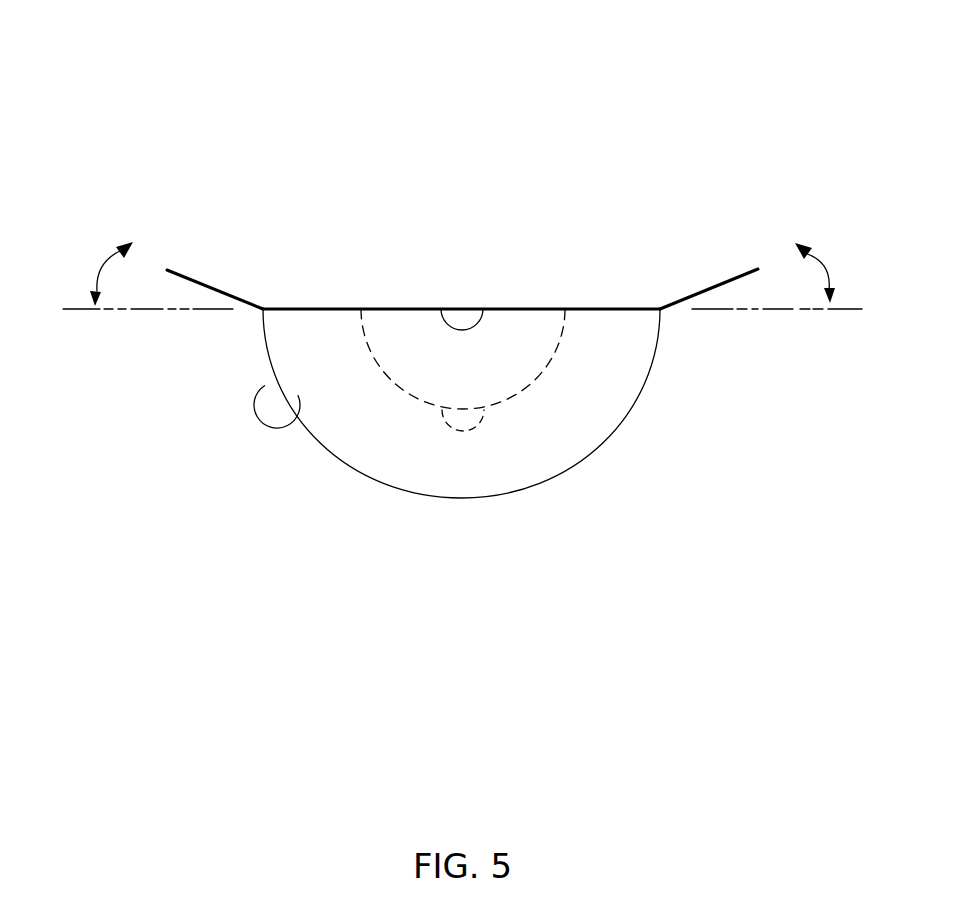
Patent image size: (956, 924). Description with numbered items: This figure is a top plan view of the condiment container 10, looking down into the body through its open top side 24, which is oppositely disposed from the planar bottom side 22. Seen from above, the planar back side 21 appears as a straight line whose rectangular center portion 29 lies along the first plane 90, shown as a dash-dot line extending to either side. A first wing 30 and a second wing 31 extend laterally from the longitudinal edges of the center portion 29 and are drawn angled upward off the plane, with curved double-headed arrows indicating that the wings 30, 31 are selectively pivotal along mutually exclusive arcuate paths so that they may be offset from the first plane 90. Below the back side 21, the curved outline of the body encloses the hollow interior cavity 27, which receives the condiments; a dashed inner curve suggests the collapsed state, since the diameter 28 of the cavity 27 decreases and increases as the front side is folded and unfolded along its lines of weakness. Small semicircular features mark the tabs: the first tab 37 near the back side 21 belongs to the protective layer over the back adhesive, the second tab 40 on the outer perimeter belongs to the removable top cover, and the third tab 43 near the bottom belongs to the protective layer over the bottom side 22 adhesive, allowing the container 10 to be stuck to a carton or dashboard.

The condiment container 10 is at (449, 98).
The back side 21 is at (572, 295).
The bottom side 22 is at (362, 328).
The open top side 24 is at (366, 452).
The hollow interior cavity 27 is at (552, 437).
The diameter 28 is at (583, 460).
The rectangular center portion 29 is at (394, 309).
The first wing 30 is at (745, 273).
The second wing 31 is at (190, 274).
The first tab 37 is at (467, 318).
The second tab 40 is at (272, 408).
The third tab 43 is at (462, 430).
The first plane 90 is at (157, 311).